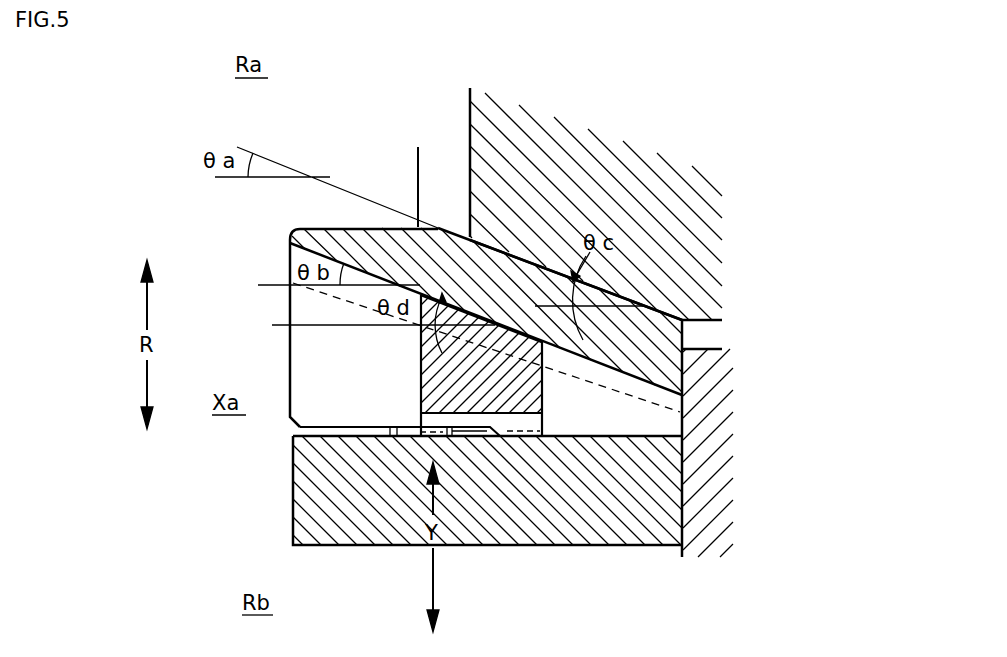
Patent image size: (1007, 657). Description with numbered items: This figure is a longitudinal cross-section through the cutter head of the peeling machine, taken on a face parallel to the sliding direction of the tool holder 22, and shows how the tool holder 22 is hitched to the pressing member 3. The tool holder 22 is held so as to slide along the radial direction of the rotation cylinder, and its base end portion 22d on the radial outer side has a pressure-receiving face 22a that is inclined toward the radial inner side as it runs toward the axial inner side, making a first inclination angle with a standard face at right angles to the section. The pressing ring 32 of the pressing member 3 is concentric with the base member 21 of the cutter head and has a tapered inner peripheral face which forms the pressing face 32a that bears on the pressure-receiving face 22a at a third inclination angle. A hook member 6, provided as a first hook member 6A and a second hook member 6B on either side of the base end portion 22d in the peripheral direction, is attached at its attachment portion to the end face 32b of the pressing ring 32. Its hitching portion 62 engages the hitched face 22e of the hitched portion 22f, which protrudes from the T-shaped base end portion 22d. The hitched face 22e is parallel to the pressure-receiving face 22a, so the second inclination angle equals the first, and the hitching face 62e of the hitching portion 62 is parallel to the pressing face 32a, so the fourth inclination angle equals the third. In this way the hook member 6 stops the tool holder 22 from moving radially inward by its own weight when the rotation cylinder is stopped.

The pressing member 3 is at (432, 196).
The pressing ring 32 is at (460, 152).
The pressing face 32a is at (511, 258).
The end face 32b is at (472, 170).
The base member 21 is at (672, 485).
The tool holder 22 is at (276, 451).
The pressure-receiving face 22a is at (488, 240).
The base end portion 22d is at (280, 262).
The hitched face 22e is at (520, 336).
The hitched portion 22f is at (345, 223).
The hitching portion 62 is at (407, 393).
The hitching face 62e is at (497, 322).
The hook member 6 is at (378, 278).
The first hook member 6A is at (407, 367).
The second hook member 6B is at (403, 148).